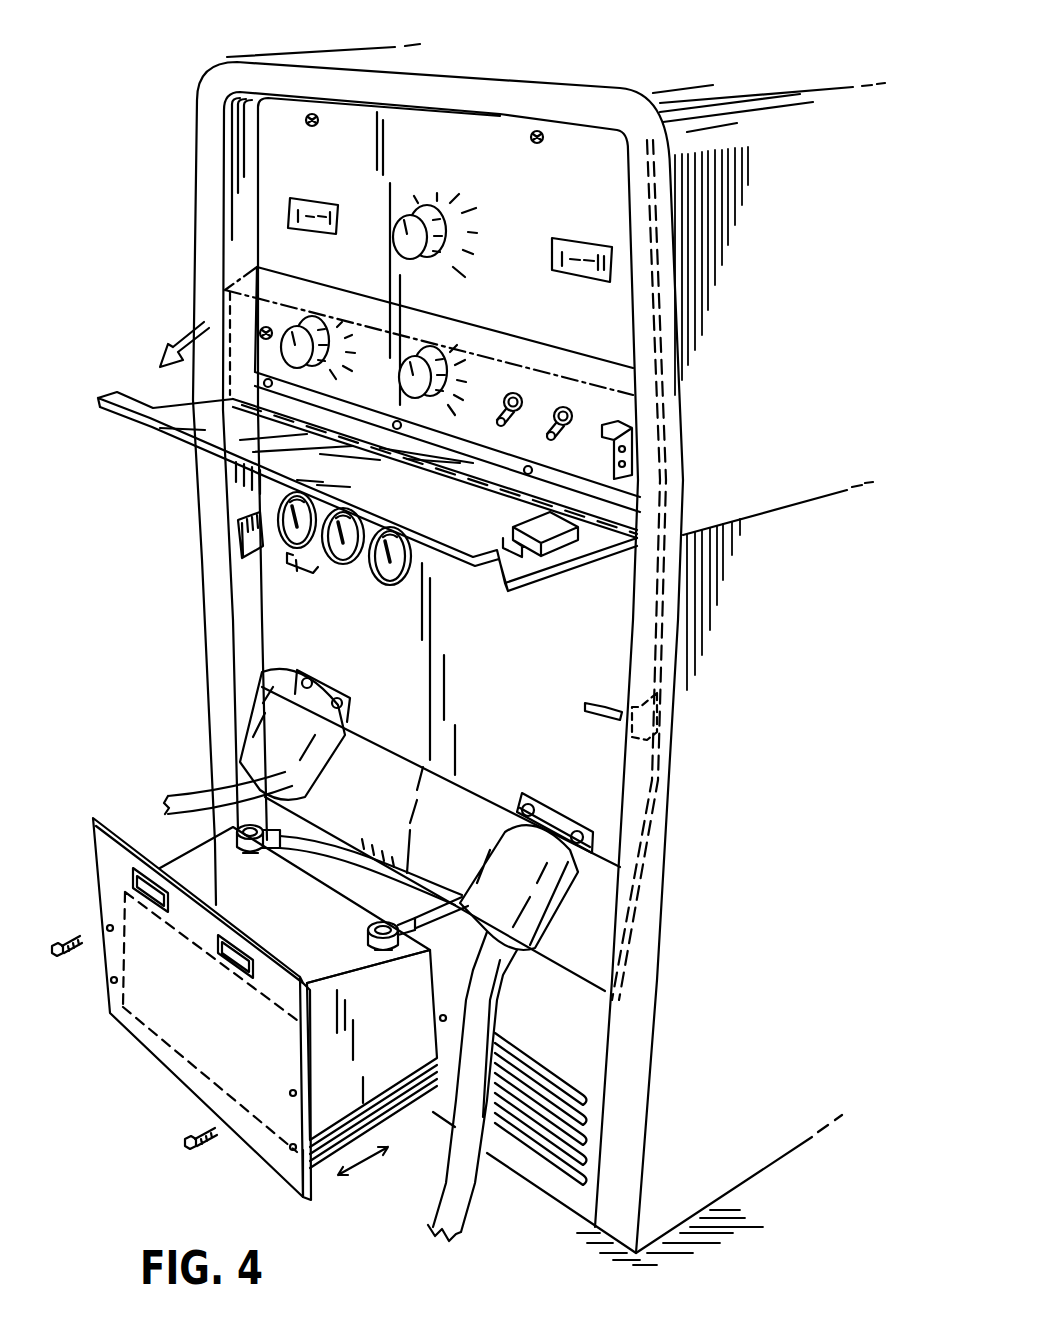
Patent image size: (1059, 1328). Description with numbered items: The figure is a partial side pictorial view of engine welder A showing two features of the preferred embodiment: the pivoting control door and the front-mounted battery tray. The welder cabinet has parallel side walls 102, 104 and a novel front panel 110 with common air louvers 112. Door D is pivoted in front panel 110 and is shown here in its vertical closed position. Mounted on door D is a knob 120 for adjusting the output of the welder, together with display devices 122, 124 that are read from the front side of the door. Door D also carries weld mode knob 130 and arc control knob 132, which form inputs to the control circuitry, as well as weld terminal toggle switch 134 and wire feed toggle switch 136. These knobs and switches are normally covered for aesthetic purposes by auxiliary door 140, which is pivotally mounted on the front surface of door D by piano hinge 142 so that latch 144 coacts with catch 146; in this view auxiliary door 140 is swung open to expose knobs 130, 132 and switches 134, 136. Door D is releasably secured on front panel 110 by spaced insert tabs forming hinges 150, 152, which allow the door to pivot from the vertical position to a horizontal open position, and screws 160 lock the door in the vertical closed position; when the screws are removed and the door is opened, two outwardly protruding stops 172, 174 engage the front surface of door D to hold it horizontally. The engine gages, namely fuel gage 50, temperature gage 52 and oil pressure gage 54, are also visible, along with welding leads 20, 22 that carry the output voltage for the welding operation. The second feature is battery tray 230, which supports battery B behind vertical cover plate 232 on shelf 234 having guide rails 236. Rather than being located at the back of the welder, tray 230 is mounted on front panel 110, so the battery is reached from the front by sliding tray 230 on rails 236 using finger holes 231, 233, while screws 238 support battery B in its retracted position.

The engine welder A is at (305, 36).
The battery B is at (297, 883).
The door D is at (614, 634).
The lead 20 is at (185, 800).
The lead 22 is at (467, 1198).
The fuel gage 50 is at (290, 508).
The temperature gage 52 is at (341, 565).
The oil pressure gage 54 is at (391, 586).
The side wall 102 is at (205, 625).
The side wall 104 is at (710, 1160).
The front panel 110 is at (595, 767).
The air louvers 112 is at (550, 1153).
The knob 120 is at (443, 217).
The display device 122 is at (317, 198).
The display device 124 is at (577, 238).
The weld mode knob 130 is at (320, 328).
The arc control knob 132 is at (437, 345).
The weld terminal toggle switch 134 is at (505, 407).
The wire feed toggle switch 136 is at (550, 412).
The auxiliary door 140 is at (530, 580).
The piano hinge 142 is at (610, 522).
The latch 144 is at (560, 538).
The catch 146 is at (620, 426).
The hinge 150 is at (300, 575).
The hinge 152 is at (590, 707).
The screws 160 is at (540, 132).
The stop 172 is at (657, 742).
The stop 174 is at (240, 541).
The battery tray 230 is at (185, 1042).
The finger hole 231 is at (235, 962).
The vertical cover plate 232 is at (153, 1003).
The finger hole 233 is at (130, 872).
The shelf 234 is at (317, 1167).
The guide rails 236 is at (390, 1103).
The screws 238 is at (58, 958).